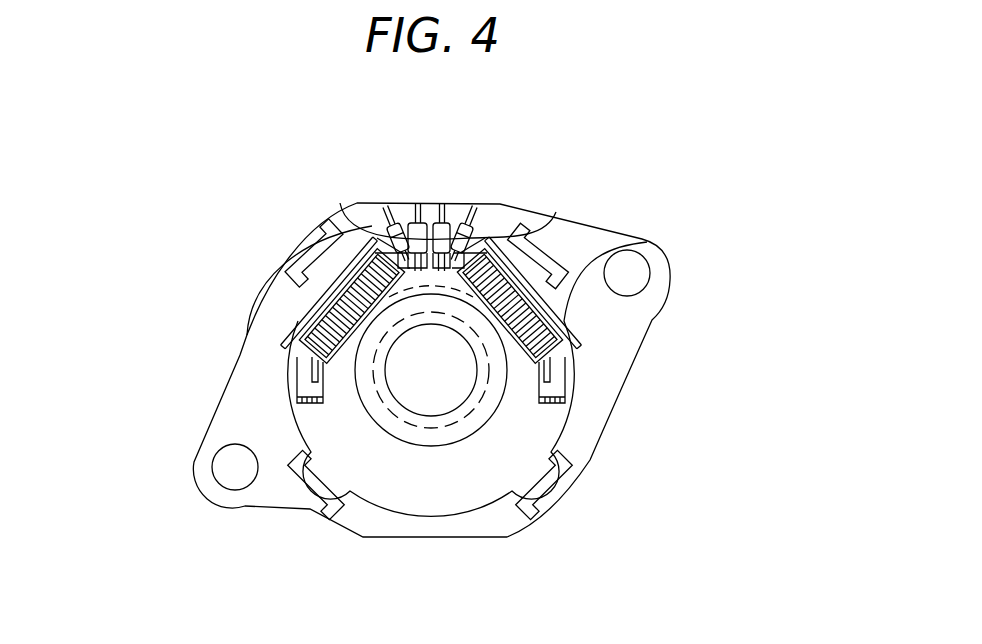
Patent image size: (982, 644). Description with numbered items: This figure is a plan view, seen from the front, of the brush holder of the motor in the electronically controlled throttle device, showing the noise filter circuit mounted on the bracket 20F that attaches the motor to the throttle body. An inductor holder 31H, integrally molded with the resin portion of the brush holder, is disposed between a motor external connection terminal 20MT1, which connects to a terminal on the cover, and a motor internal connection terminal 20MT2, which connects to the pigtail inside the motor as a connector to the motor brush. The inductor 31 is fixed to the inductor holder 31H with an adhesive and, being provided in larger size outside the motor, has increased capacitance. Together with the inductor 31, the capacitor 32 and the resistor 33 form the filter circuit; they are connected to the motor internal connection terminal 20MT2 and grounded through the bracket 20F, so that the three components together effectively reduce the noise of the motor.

The bracket 20F is at (661, 266).
The motor external connection terminal 20MT1 is at (303, 382).
The motor internal connection terminal 20MT2 is at (335, 238).
The inductor 31 is at (295, 316).
The inductor holder 31H is at (347, 253).
The capacitor 32 is at (340, 203).
The resistor 33 is at (417, 202).